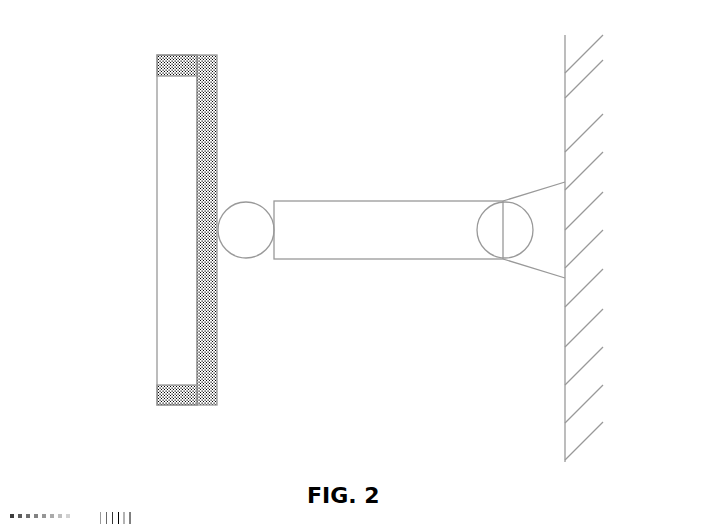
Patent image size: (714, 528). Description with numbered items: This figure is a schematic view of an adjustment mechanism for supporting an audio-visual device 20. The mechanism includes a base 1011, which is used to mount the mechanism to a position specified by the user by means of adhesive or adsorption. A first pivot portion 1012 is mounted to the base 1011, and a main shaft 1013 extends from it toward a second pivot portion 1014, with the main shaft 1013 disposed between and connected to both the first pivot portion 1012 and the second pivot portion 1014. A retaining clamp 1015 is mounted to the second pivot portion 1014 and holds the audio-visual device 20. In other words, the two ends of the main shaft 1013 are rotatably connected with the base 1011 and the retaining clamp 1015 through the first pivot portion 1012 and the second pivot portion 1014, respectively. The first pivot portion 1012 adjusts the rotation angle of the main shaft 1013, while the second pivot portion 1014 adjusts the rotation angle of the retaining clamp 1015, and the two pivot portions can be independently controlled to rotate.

The audio-visual device 20 is at (157, 207).
The base 1011 is at (537, 192).
The first pivot portion 1012 is at (508, 258).
The main shaft 1013 is at (352, 201).
The second pivot portion 1014 is at (246, 202).
The retaining clamp 1015 is at (217, 118).